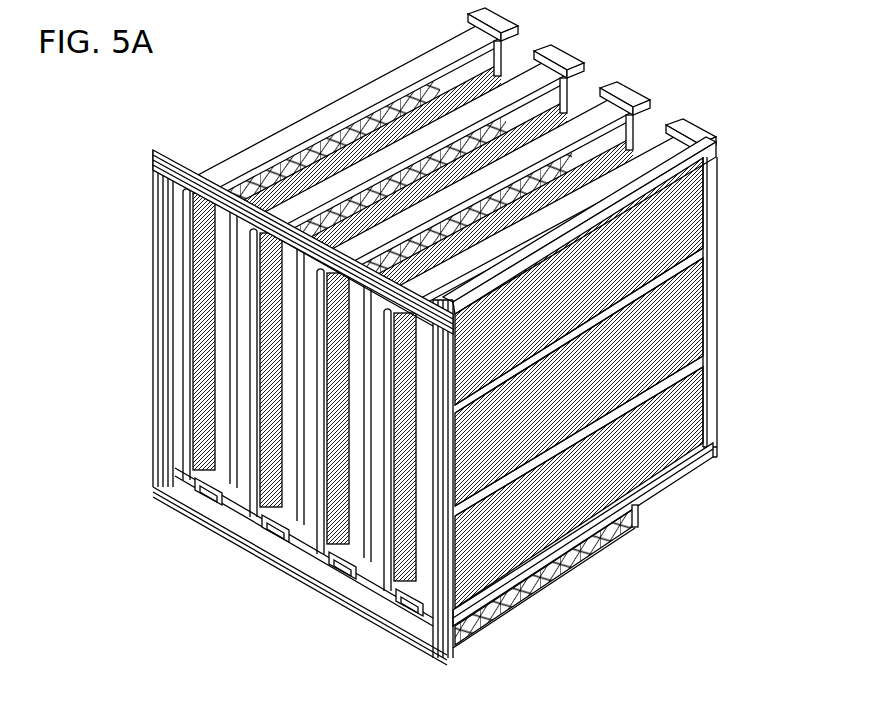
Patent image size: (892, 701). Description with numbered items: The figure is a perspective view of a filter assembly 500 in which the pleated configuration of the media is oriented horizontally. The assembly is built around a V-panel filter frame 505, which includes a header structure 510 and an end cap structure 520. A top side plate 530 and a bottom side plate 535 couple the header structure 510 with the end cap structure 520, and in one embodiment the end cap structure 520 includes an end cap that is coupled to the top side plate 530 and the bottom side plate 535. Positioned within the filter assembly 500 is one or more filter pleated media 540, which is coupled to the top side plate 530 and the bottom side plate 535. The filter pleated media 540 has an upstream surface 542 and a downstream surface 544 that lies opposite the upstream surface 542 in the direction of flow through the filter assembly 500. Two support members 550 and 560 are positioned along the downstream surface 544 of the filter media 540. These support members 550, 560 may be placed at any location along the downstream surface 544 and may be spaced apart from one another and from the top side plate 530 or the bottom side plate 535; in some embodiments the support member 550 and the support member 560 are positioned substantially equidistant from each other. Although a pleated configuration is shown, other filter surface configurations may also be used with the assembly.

The filter assembly 500 is at (483, 336).
The V-panel filter frame 505 is at (178, 150).
The header structure 510 is at (460, 613).
The end cap structure 520 is at (708, 190).
The top side plate 530 is at (686, 147).
The bottom side plate 535 is at (677, 478).
The filter pleated media 540 is at (692, 316).
The upstream surface 542 is at (378, 570).
The downstream surface 544 is at (573, 548).
The support member 550 is at (692, 365).
The support member 560 is at (692, 256).